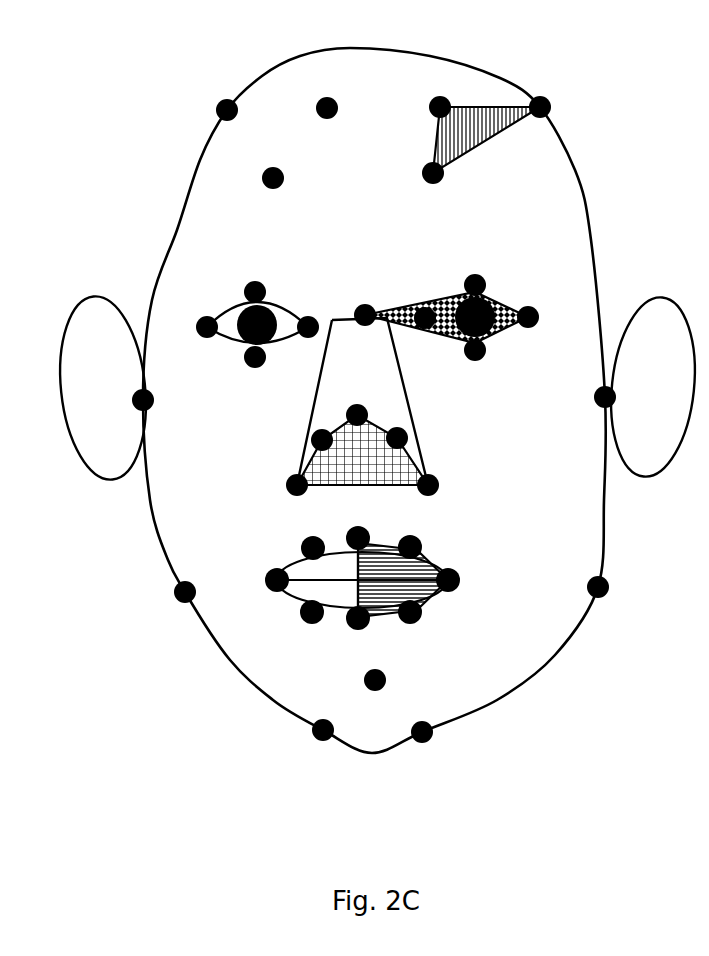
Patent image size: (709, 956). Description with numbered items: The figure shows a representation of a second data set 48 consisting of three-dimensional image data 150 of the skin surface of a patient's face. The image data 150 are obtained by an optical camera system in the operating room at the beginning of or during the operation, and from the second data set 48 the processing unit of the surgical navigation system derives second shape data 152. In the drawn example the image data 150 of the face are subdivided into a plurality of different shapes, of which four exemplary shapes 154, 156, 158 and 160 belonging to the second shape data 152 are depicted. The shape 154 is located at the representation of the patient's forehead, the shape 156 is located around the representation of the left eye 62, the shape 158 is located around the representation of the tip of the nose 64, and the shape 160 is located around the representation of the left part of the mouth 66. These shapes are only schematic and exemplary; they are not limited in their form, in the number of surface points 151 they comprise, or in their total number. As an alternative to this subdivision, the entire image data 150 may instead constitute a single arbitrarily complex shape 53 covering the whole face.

The second data set 48 is at (611, 64).
The single arbitrarily complex shape 53 is at (255, 259).
The three-dimensional image data 150 is at (588, 211).
The surface points 151 is at (222, 101).
The second shape data 152 is at (413, 162).
The shape 154 is at (480, 148).
The shape 156 is at (510, 298).
The left eye 62 is at (508, 336).
The nose 64 is at (312, 410).
The shape 158 is at (307, 463).
The mouth 66 is at (292, 598).
The shape 160 is at (430, 598).